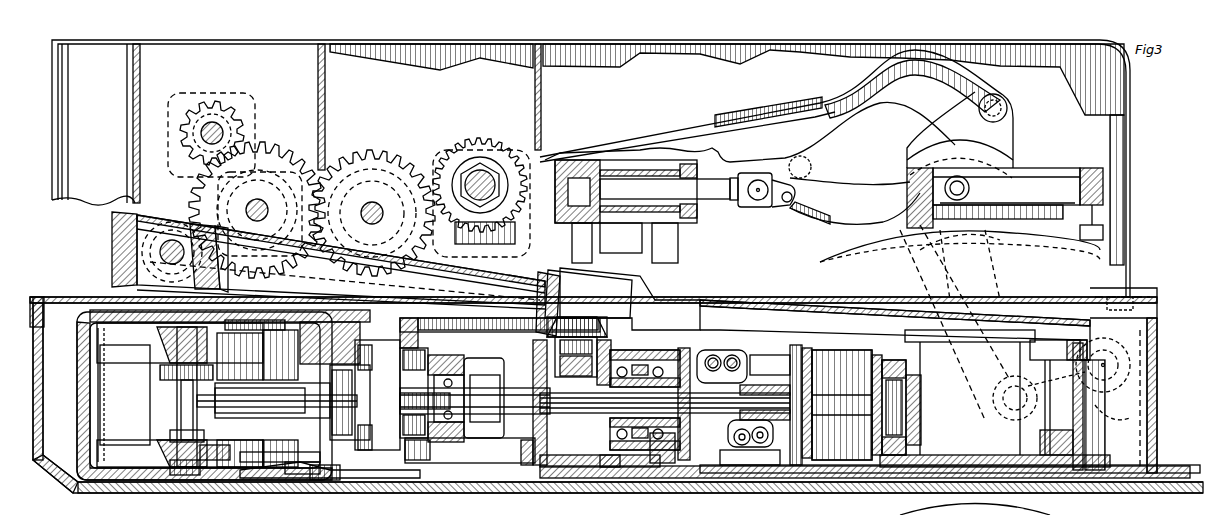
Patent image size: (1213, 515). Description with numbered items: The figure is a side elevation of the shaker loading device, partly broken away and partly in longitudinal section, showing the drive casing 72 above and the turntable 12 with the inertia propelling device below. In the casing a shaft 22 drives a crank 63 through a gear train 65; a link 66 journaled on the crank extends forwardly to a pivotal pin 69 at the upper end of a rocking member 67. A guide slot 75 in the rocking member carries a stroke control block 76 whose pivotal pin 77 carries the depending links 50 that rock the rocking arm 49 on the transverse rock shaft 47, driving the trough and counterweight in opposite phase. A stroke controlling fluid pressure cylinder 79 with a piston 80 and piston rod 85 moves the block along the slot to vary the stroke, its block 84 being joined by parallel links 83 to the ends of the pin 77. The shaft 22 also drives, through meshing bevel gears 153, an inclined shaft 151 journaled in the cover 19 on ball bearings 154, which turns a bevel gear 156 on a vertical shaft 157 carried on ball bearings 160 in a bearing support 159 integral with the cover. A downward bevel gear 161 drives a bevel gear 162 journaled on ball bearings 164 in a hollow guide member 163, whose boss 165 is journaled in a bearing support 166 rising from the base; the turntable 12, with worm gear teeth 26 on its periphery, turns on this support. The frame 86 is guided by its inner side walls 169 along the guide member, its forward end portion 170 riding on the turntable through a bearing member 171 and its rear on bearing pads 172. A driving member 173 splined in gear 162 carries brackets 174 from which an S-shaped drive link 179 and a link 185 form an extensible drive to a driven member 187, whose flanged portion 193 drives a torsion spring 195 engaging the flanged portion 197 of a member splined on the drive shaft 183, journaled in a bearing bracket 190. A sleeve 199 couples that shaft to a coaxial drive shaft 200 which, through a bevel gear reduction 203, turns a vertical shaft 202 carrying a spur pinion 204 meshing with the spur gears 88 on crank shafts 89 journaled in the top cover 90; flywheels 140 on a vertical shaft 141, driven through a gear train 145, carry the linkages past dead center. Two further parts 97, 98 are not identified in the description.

The turntable 12 is at (1085, 482).
The cover 19 is at (730, 290).
The shaft 22 is at (130, 241).
The worm gear teeth 26 is at (1085, 440).
The rock shaft 47 is at (1118, 364).
The rocking arm 49 is at (1125, 408).
The links 50 is at (1000, 280).
The crank 63 is at (484, 150).
The gear train 65 is at (290, 152).
The link 66 is at (738, 120).
The rocking member 67 is at (1016, 128).
The pivotal pin 69 is at (1009, 105).
The casing 72 is at (1131, 175).
The guide slot 75 is at (1060, 170).
The stroke control block 76 is at (1010, 172).
The pivotal pin 77 is at (903, 163).
The stroke controlling fluid pressure cylinder 79 is at (625, 172).
The piston 80 is at (582, 178).
The links 83 is at (840, 196).
The block 84 is at (790, 190).
The piston rod 85 is at (668, 165).
The frame and bearing support 86 is at (80, 432).
The spur gears 88 is at (300, 340).
The crank shafts 89 is at (260, 440).
The top cover 90 is at (100, 297).
The motor shaft 97 is at (225, 470).
The bearing 98 is at (190, 478).
The flywheels 140 is at (128, 340).
The vertical shaft 141 is at (178, 415).
The gear train 145 is at (158, 385).
The shaft 151 is at (268, 233).
The bevel gears 153 is at (135, 233).
The ball bearings 154 is at (230, 230).
The bevel gear 156 is at (660, 290).
The vertical shaft 157 is at (670, 353).
The bearing support 159 is at (540, 370).
The ball bearings 160 is at (540, 346).
The bevel gear 161 is at (500, 450).
The bevel gear 162 is at (610, 390).
The hollow guide member 163 is at (665, 470).
The ball bearings 164 is at (636, 348).
The boss 165 is at (598, 243).
The bearing support 166 is at (540, 470).
The inner side walls 169 is at (465, 450).
The forward end portion 170 is at (920, 450).
The bearing member 171 is at (868, 470).
The bearing pads 172 is at (342, 488).
The driving member 173 is at (725, 352).
The brackets 174 is at (762, 460).
The S-shaped drive link 179 is at (775, 355).
The drive shaft 183 is at (745, 450).
The link 185 is at (748, 350).
The driven member 187 is at (808, 348).
The bearing bracket 190 is at (893, 362).
The flanged portion 193 is at (796, 350).
The torsion spring 195 is at (838, 350).
The flanged portion 197 is at (876, 355).
The sleeve 199 is at (512, 382).
The drive shaft 200 is at (535, 380).
The vertical shaft 202 is at (352, 425).
The bevel gear reduction 203 is at (395, 462).
The spur pinion 204 is at (408, 332).